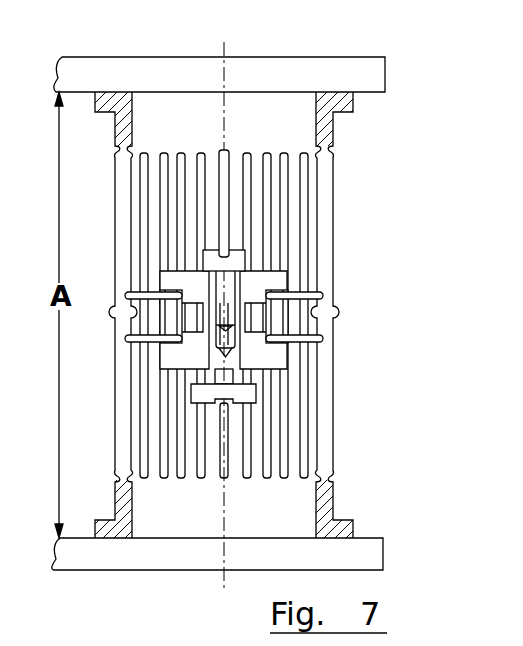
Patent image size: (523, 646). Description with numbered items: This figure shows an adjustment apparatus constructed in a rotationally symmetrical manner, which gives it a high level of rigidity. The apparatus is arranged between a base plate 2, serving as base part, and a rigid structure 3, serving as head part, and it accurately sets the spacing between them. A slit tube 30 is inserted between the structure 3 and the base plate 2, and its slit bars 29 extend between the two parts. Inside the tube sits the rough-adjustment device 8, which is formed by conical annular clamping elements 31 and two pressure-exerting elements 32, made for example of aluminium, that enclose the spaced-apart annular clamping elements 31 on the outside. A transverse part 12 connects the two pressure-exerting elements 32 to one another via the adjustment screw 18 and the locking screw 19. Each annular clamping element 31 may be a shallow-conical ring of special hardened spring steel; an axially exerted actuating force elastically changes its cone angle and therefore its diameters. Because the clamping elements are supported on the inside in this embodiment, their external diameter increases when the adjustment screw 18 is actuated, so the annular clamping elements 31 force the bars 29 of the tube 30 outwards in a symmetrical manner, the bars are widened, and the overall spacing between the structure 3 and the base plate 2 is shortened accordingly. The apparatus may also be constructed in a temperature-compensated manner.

The base plate 2 is at (130, 562).
The structure 3 is at (375, 70).
The rough-adjustment device 8 is at (335, 212).
The transverse part 12 is at (250, 333).
The adjustment screw 18 is at (205, 397).
The locking screw 19 is at (233, 257).
The slit bars 29 is at (293, 183).
The tube 30 is at (333, 445).
The annular clamping elements 31 is at (313, 335).
The pressure-exerting elements 32 is at (173, 282).